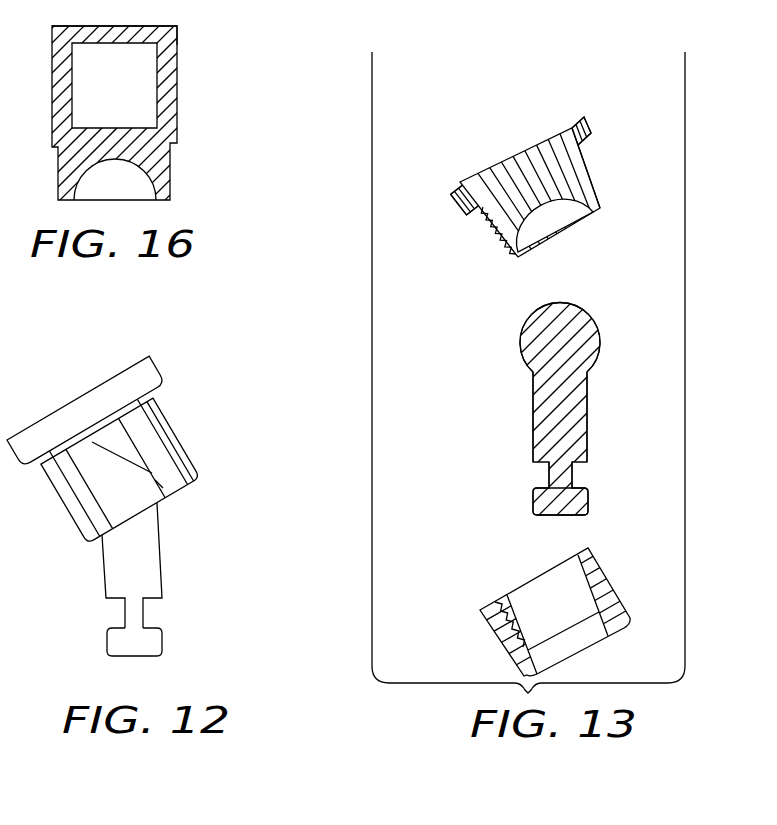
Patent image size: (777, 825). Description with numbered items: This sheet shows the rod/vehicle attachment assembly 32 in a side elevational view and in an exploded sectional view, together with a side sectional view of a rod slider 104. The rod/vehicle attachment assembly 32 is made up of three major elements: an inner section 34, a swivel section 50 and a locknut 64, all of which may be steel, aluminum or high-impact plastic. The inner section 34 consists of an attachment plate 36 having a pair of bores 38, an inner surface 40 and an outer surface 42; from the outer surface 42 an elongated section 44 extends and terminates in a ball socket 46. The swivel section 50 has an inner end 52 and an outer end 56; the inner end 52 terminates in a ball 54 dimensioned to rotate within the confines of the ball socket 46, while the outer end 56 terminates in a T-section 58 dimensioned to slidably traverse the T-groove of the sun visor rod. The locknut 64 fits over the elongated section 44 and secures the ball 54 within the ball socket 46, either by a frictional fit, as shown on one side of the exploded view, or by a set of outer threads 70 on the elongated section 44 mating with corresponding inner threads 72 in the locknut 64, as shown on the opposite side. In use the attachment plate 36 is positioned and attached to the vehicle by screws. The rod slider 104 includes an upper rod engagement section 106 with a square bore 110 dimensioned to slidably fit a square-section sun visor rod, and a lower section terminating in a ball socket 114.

In FIG. 12, the rod/vehicle attachment assembly 32 is at (160, 475).
In FIG. 13, the inner section 34 is at (519, 169).
In FIG. 12, the attachment plate 36 is at (143, 367).
In FIG. 13, the attachment plate 36 is at (590, 128).
In FIG. 13, the bores 38 is at (570, 125).
In FIG. 13, the inner surface 40 is at (512, 155).
In FIG. 13, the outer surface 42 is at (452, 208).
In FIG. 13, the elongated section 44 is at (578, 190).
In FIG. 13, the ball socket 46 is at (550, 218).
In FIG. 13, the swivel section 50 is at (538, 397).
In FIG. 13, the inner end 52 is at (552, 310).
In FIG. 13, the ball 54 is at (582, 323).
In FIG. 12, the outer end 56 is at (140, 547).
In FIG. 13, the outer end 56 is at (537, 415).
In FIG. 12, the T-section 58 is at (148, 615).
In FIG. 13, the T-section 58 is at (578, 472).
In FIG. 12, the locknut 64 is at (165, 450).
In FIG. 13, the locknut 64 is at (523, 607).
In FIG. 13, the outer threads 70 is at (490, 237).
In FIG. 13, the inner threads 72 is at (514, 620).
In FIG. 16, the rod slider 104 is at (178, 168).
In FIG. 16, the upper rod engagement section 106 is at (172, 33).
In FIG. 16, the square bore 110 is at (127, 87).
In FIG. 16, the ball socket 114 is at (135, 185).